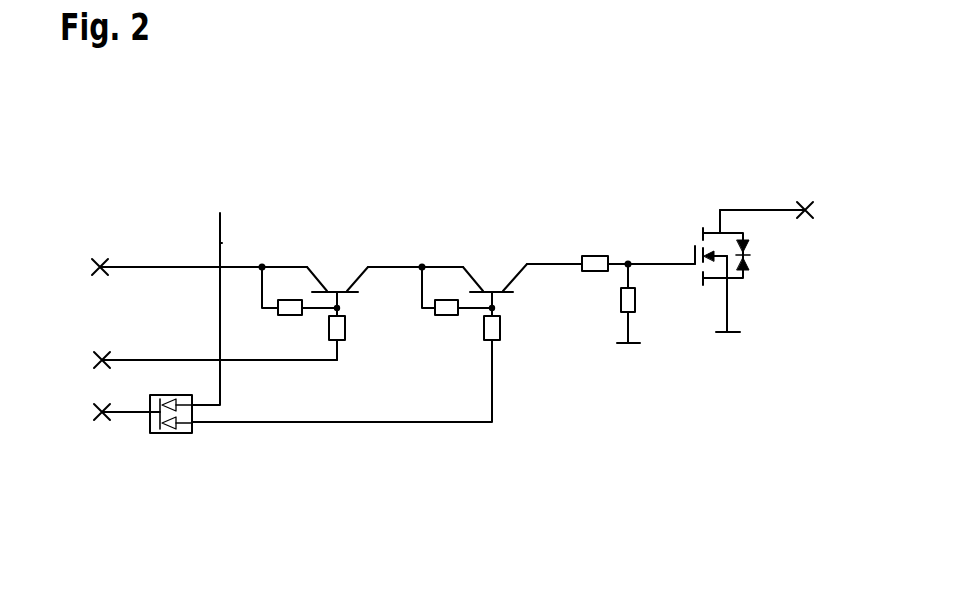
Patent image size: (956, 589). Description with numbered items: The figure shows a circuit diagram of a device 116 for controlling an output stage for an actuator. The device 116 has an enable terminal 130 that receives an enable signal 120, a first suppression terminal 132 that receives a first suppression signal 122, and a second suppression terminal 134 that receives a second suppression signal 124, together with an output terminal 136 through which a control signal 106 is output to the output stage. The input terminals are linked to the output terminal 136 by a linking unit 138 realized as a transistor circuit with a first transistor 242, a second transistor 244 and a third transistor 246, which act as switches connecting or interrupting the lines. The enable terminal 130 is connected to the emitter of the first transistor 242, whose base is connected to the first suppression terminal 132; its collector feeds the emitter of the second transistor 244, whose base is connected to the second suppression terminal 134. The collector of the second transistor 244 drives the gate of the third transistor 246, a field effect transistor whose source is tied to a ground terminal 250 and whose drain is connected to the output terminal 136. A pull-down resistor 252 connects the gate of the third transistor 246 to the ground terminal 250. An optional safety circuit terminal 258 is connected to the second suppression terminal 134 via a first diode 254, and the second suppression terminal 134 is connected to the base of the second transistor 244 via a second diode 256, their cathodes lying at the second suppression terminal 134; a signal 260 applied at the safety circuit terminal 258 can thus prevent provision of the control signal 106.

The device 116 is at (743, 124).
The linking unit 138 is at (473, 470).
The enable terminal 130 is at (100, 262).
The enable signal 120 is at (152, 267).
The first suppression terminal 132 is at (100, 355).
The first suppression signal 122 is at (137, 360).
The second suppression terminal 134 is at (95, 420).
The second suppression signal 124 is at (130, 416).
The first diode 254 is at (165, 395).
The second diode 256 is at (172, 433).
The safety circuit terminal 258 is at (219, 213).
The signal 260 is at (220, 243).
The first transistor 242 is at (317, 276).
The second transistor 244 is at (476, 274).
The third transistor 246 is at (706, 232).
The output terminal 136 is at (800, 210).
The control signal 106 is at (768, 213).
The pull-down resistor 252 is at (618, 300).
The ground terminal 250 is at (631, 345).